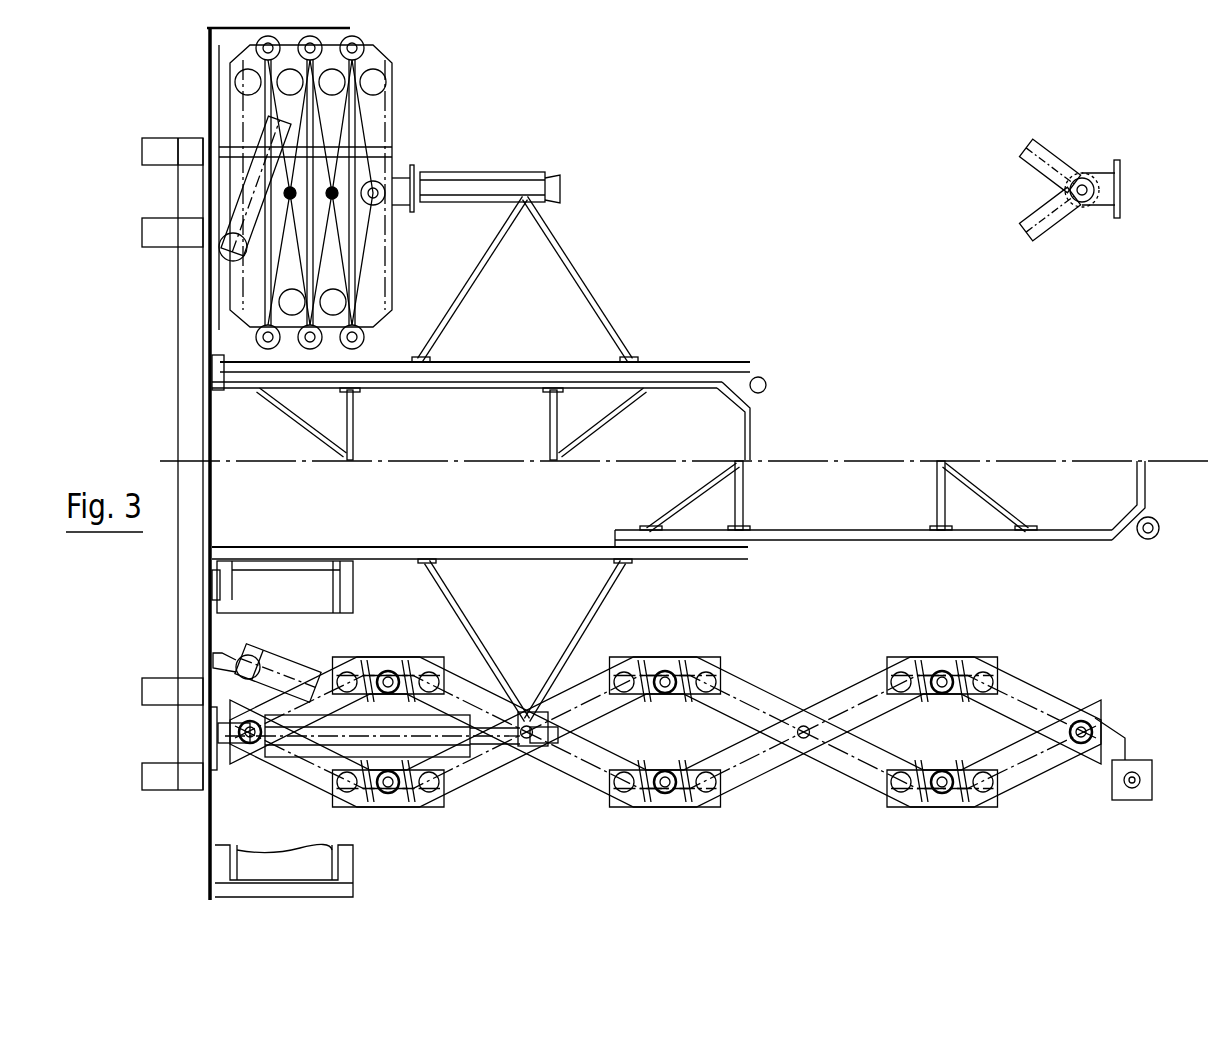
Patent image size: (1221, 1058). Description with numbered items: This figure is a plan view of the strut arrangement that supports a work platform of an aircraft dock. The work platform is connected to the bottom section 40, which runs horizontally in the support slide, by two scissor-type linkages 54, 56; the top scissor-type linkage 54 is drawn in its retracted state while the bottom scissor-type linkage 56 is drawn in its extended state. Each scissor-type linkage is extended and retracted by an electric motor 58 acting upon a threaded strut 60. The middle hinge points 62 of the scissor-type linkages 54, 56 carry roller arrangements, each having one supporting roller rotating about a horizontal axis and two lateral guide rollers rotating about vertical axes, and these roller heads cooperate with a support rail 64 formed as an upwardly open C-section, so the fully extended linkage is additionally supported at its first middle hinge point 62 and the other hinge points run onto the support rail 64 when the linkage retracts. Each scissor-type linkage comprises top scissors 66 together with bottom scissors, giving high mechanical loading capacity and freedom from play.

The bottom section 40 is at (190, 419).
The scissor-type linkage 54 is at (392, 125).
The scissor-type linkage 56 is at (458, 672).
The electric motor 58 is at (287, 663).
The threaded strut 60 is at (328, 700).
The middle hinge point 62 is at (525, 720).
The support rail 64 is at (462, 193).
The top scissors 66 is at (895, 665).